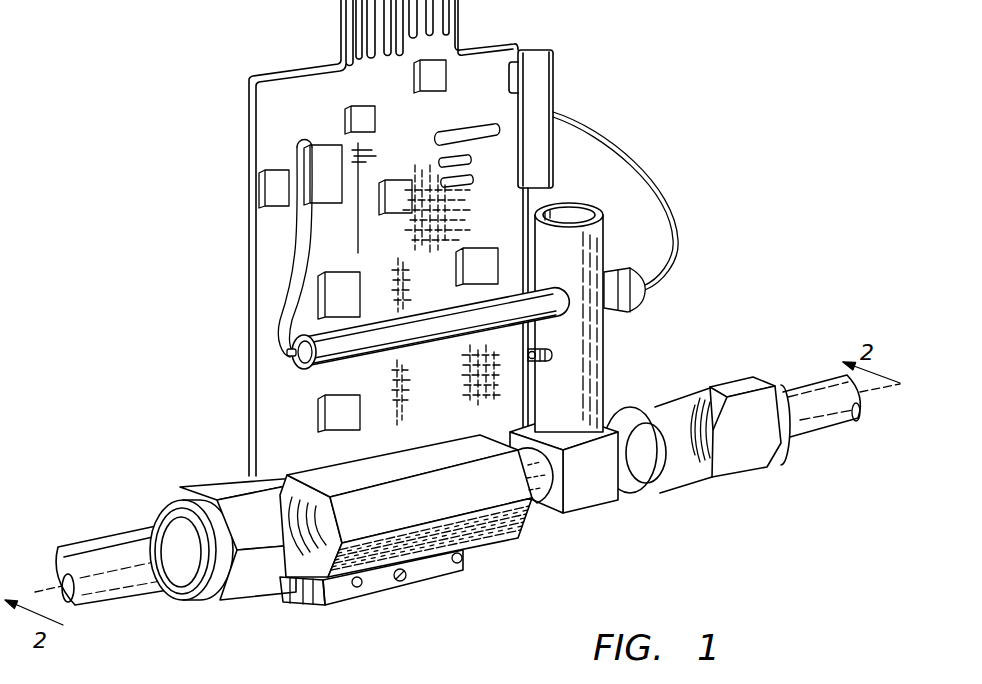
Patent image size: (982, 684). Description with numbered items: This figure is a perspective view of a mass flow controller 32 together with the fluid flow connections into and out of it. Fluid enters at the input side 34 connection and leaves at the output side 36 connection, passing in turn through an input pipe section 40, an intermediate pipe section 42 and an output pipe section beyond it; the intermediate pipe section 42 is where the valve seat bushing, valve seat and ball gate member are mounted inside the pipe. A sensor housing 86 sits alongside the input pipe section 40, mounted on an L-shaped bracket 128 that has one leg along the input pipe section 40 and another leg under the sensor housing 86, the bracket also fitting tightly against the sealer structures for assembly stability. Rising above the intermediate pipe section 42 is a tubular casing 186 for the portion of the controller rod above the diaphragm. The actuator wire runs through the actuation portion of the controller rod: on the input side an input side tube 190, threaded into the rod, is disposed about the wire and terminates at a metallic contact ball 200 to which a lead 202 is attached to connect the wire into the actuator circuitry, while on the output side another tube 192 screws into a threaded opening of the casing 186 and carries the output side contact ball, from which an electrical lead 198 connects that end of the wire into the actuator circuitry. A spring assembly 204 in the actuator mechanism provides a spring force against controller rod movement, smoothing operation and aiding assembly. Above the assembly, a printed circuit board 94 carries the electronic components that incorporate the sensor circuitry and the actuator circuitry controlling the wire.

The printed circuit board 94 is at (283, 72).
The lead wire 198 is at (632, 166).
The output side tube 192 is at (620, 268).
The mass flow controller 32 is at (619, 327).
The tubular casing 186 is at (580, 342).
The spring assembly 204 is at (549, 361).
The lead 202 is at (290, 258).
The metallic contact ball 200 is at (293, 358).
The tube 190 is at (333, 368).
The output side connection 36 is at (783, 443).
The intermediate pipe section 42 is at (587, 487).
The input pipe section 40 is at (480, 527).
The L-shaped bracket 128 is at (420, 571).
The sensor housing 86 is at (296, 590).
The input side connection 34 is at (168, 590).